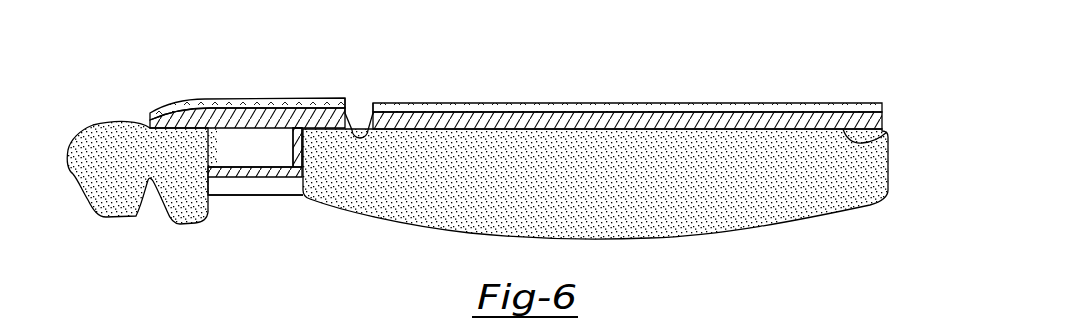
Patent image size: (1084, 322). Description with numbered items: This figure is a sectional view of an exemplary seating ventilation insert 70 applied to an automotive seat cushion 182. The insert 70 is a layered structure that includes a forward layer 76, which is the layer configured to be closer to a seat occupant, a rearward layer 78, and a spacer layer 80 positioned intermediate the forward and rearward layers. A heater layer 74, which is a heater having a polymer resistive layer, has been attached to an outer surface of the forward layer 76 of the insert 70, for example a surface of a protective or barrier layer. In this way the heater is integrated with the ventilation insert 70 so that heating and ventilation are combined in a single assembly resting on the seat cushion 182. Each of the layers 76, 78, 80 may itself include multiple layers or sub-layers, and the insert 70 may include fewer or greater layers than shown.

The ventilation insert 70 is at (503, 162).
The heater layer 74 is at (753, 104).
The forward layer 76 is at (522, 118).
The rearward layer 78 is at (856, 142).
The spacer layer 80 is at (464, 112).
The automotive seat cushion 182 is at (738, 212).